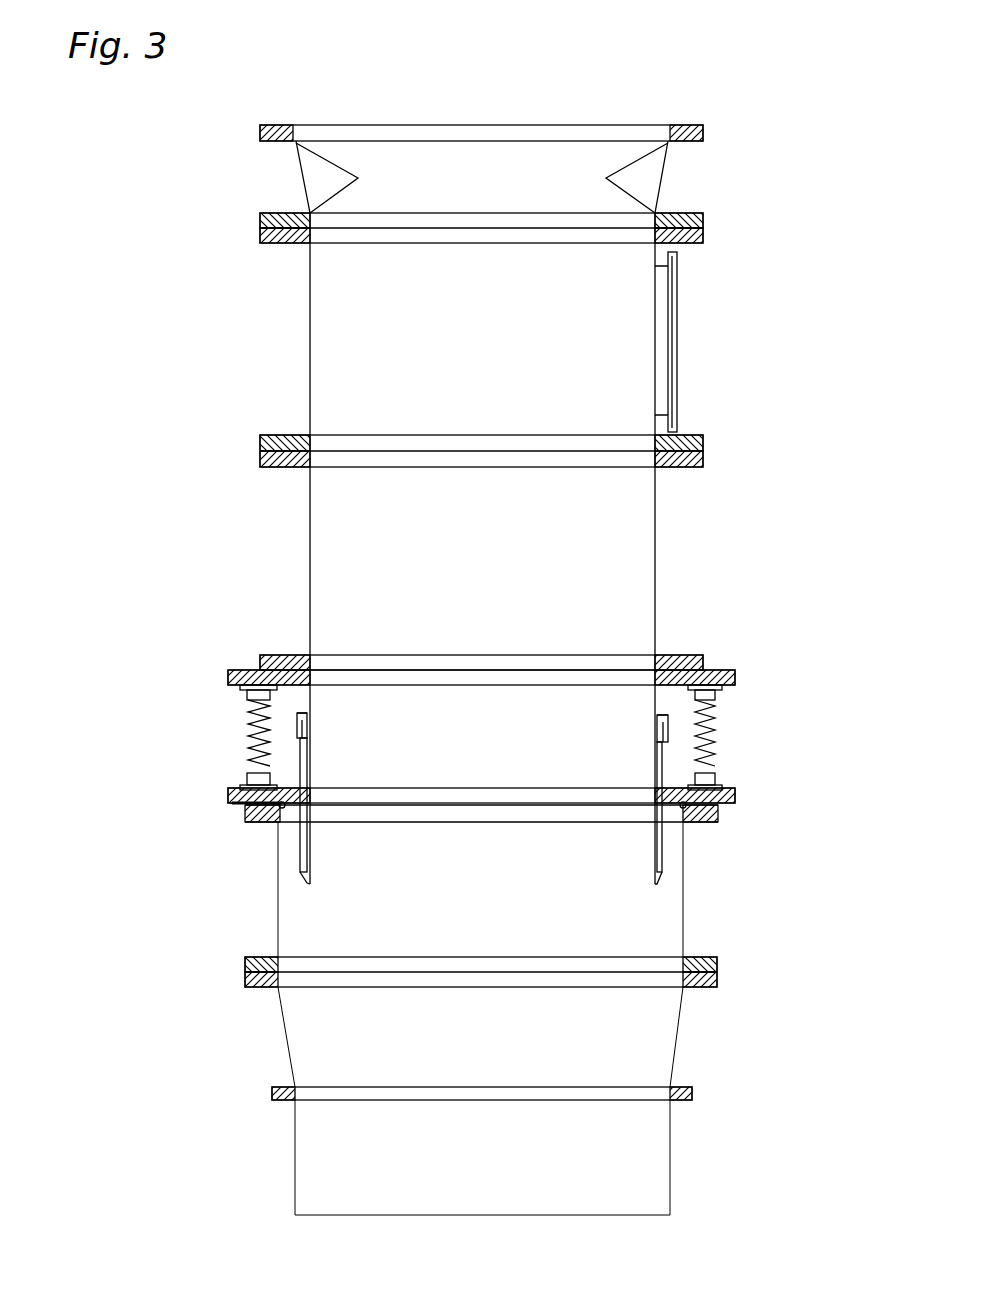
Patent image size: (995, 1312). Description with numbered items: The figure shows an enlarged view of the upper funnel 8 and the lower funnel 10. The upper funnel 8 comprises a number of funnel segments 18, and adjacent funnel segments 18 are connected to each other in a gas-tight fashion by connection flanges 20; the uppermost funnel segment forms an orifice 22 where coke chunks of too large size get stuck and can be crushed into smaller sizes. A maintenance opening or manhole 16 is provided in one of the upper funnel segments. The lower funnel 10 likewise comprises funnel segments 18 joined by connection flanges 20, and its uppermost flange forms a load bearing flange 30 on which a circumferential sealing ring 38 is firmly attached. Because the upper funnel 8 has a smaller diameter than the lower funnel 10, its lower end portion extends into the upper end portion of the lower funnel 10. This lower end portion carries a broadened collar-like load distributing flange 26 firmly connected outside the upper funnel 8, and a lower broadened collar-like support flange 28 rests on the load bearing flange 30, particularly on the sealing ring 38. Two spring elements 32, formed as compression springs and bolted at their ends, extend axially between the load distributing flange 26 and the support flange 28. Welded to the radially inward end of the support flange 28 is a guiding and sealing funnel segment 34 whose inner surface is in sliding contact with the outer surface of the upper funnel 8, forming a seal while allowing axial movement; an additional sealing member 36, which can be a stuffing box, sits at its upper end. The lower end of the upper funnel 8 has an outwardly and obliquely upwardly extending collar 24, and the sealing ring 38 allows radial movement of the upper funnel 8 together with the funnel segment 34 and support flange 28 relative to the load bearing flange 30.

The upper funnel 8 is at (459, 274).
The lower funnel 10 is at (228, 1032).
The maintenance opening/manhole 16 is at (670, 335).
The funnel segments 18 is at (310, 402).
The connection flanges 20 is at (260, 234).
The orifice 22 is at (306, 180).
The outwardly extending collar 24 is at (479, 827).
The load distributing flange 26 is at (228, 676).
The support flange 28 is at (234, 792).
The load bearing flange 30 is at (260, 822).
The spring elements 32 is at (250, 744).
The guiding and sealing funnel segment 34 is at (300, 866).
The additional sealing member 36 is at (297, 722).
The circumferential sealing ring 38 is at (250, 800).